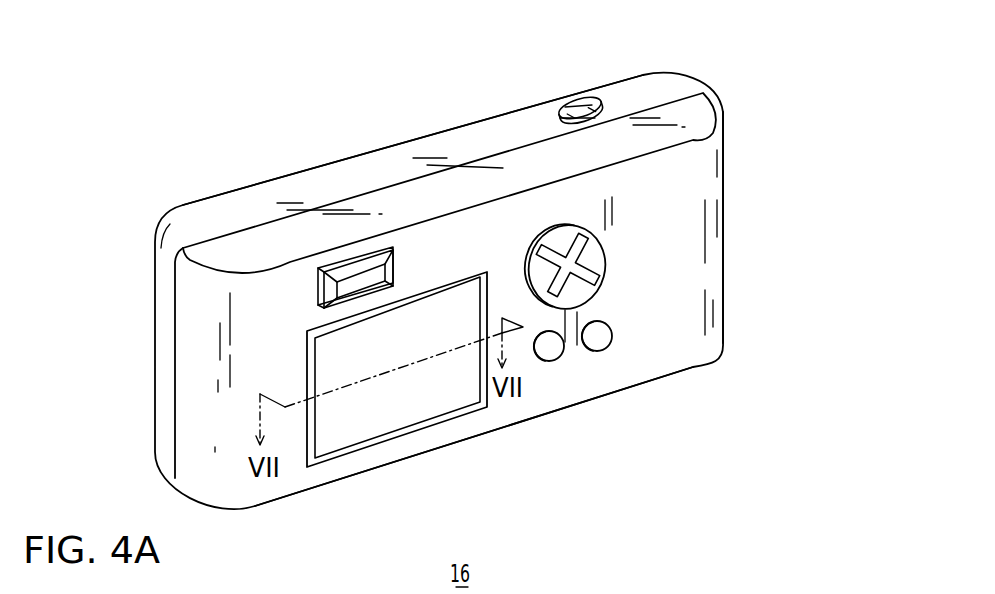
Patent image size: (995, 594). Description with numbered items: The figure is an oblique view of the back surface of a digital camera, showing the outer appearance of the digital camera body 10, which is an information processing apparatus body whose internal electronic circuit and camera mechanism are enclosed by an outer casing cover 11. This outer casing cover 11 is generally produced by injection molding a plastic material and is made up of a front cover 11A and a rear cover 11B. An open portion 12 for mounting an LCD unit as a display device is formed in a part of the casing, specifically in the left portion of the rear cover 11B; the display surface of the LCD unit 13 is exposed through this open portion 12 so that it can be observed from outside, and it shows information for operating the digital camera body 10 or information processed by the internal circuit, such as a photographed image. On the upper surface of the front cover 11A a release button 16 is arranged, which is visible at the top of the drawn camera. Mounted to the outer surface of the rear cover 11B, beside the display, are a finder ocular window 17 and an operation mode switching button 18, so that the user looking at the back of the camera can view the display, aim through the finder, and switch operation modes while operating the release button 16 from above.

The digital camera body 10 is at (428, 150).
The outer casing cover 11 is at (662, 359).
The front cover 11A is at (622, 77).
The rear cover 11B is at (710, 183).
The open portion 12 is at (460, 418).
The display surface of the LCD unit 13 is at (380, 422).
The release button 16 is at (575, 104).
The finder ocular window 17 is at (344, 281).
The operation mode switching button 18 is at (613, 276).